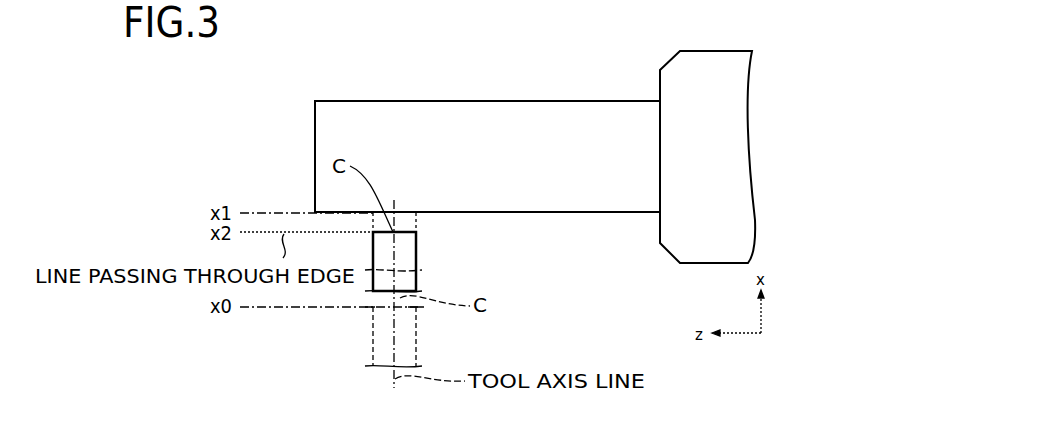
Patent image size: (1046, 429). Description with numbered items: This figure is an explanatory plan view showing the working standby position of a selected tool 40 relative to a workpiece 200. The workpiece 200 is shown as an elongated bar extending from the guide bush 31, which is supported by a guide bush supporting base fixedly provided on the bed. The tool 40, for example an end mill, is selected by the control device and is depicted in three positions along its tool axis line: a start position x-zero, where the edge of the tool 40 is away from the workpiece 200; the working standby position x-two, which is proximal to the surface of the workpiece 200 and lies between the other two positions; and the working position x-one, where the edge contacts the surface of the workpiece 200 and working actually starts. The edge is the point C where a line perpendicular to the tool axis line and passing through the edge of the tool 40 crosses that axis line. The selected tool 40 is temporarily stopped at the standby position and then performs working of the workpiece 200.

The workpiece 200 is at (462, 110).
The guide bush 31 is at (712, 58).
The tool 40 is at (405, 237).